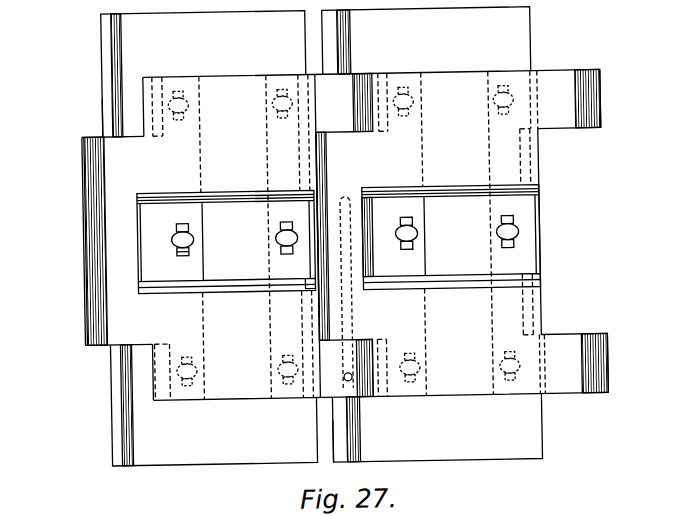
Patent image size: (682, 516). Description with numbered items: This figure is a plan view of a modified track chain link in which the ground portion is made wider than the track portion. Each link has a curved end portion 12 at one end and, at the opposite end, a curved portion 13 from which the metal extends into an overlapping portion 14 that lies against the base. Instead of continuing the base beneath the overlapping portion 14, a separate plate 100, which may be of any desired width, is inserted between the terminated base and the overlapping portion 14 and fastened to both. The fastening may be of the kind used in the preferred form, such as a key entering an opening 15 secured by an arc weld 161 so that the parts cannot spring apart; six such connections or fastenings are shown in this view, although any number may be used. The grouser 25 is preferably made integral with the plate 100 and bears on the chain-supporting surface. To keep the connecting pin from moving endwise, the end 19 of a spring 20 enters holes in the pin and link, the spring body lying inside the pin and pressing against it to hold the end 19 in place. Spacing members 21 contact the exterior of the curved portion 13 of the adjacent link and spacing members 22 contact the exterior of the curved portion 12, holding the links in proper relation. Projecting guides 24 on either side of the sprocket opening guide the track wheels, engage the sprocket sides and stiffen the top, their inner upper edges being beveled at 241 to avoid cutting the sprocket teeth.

The curved end portion 12 is at (605, 108).
The curved portion 13 is at (83, 237).
The overlapping portion 14 is at (195, 270).
The opening 15 is at (185, 249).
The end of spring 19 is at (348, 380).
The spring 20 is at (351, 312).
The spacing member 21 is at (541, 173).
The spacing member 22 is at (155, 74).
The projecting guide 24 is at (234, 193).
The grouser 25 is at (104, 108).
The plate 100 is at (237, 453).
The arc weld 161 is at (183, 97).
The beveled edge 241 is at (219, 196).